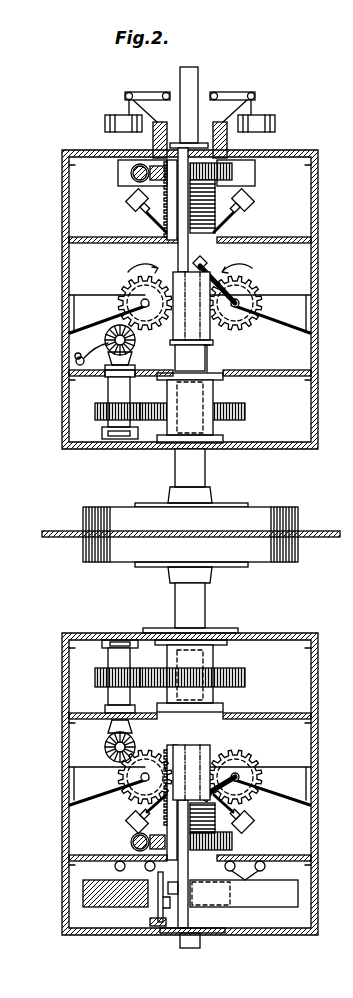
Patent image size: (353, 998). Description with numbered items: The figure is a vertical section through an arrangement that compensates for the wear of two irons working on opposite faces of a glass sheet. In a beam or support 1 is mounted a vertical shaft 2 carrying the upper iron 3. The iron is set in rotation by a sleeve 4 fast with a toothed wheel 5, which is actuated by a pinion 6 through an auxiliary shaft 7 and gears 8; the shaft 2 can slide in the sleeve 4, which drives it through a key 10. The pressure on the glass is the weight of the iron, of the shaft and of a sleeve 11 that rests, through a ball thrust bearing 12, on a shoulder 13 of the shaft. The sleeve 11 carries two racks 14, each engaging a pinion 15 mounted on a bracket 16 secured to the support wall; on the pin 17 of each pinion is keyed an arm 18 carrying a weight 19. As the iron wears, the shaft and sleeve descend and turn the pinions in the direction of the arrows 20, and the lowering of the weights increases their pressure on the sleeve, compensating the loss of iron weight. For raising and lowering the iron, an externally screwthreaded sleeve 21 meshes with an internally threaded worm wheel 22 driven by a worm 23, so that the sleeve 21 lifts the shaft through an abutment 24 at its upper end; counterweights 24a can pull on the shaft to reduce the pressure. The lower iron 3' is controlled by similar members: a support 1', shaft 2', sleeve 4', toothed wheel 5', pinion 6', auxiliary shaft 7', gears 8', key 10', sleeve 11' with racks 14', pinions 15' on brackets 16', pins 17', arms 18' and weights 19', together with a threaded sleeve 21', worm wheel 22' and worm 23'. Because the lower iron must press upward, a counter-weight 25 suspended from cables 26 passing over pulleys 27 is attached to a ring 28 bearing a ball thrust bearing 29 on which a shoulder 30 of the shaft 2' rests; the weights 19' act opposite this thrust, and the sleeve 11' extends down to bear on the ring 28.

The beam or support 1 is at (203, 299).
The vertical shaft 2 is at (192, 167).
The upper iron 3 is at (192, 516).
The sleeve 4 is at (214, 408).
The toothed wheel 5 is at (207, 412).
The pinion 6 is at (87, 413).
The auxiliary shaft 7 is at (86, 404).
The gears 8 is at (103, 347).
The key 10 is at (221, 411).
The sleeve 11 is at (175, 311).
The ball thrust bearing 12 is at (212, 358).
The shoulder 13 is at (182, 350).
The racks 14 is at (189, 300).
The pinion 15 is at (190, 286).
The bracket 16 is at (170, 316).
The pin 17 is at (190, 281).
The arm 18 is at (189, 227).
The weight 19 is at (189, 203).
The arrows 20 is at (189, 260).
The externally screwthreaded sleeve 21 is at (241, 196).
The worm wheel 22 is at (248, 152).
The worm 23 is at (122, 173).
The abutment 24 is at (153, 138).
The counterweights 24a is at (120, 103).
The support 1' is at (173, 784).
The shaft 2' is at (194, 781).
The lower iron 3' is at (191, 542).
The sleeve 4' is at (207, 676).
The toothed wheel 5' is at (210, 678).
The pinion 6' is at (85, 668).
The auxiliary shaft 7' is at (107, 676).
The gears 8' is at (105, 741).
The key 10' is at (223, 678).
The sleeve 11' is at (192, 756).
The racks 14' is at (189, 767).
The pinion 15' is at (183, 773).
The bracket 16' is at (191, 773).
The pin 17' is at (198, 786).
The arm 18' is at (222, 780).
The weight 19' is at (198, 819).
The externally screwthreaded sleeve 21' is at (246, 830).
The worm wheel 22' is at (231, 836).
The worm 23' is at (122, 843).
The counter-weight 25 is at (282, 897).
The cables 26 is at (330, 874).
The pulleys 27 is at (244, 893).
The ring 28 is at (158, 900).
The ball thrust bearing 29 is at (170, 905).
The shoulder 30 is at (175, 890).